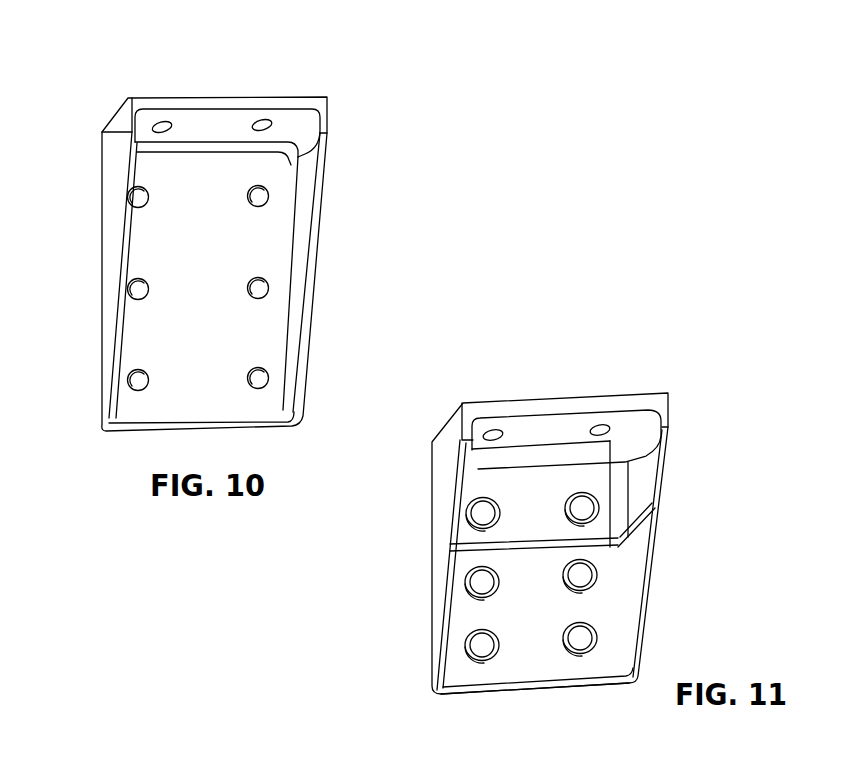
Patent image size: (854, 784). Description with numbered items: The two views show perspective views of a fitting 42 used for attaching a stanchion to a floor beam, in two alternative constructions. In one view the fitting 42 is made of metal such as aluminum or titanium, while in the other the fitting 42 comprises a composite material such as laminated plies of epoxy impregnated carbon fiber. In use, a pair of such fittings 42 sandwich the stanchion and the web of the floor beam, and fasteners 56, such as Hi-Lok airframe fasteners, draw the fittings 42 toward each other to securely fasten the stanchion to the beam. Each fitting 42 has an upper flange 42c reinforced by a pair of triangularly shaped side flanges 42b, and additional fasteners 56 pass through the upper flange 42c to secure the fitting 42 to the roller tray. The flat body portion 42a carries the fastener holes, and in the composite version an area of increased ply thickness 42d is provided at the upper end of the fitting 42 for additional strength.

In FIG. 10, the fitting 42 is at (345, 254).
In FIG. 11, the fitting 42 is at (703, 428).
In FIG. 10, the base plate of bracket 42a is at (138, 342).
In FIG. 11, the base plate of bracket 42a is at (527, 650).
In FIG. 10, the side flanges 42b is at (303, 177).
In FIG. 11, the side flanges 42b is at (642, 483).
In FIG. 10, the upper flange 42c is at (222, 123).
In FIG. 11, the upper flange 42c is at (503, 403).
In FIG. 11, the area of increased ply thickness 42d is at (674, 471).
In FIG. 11, the fasteners 56 is at (583, 509).